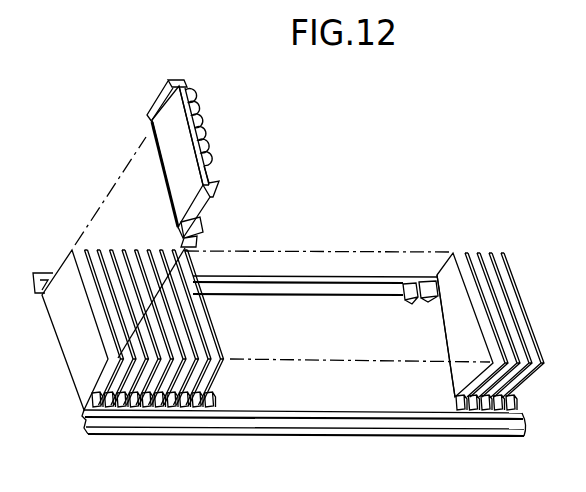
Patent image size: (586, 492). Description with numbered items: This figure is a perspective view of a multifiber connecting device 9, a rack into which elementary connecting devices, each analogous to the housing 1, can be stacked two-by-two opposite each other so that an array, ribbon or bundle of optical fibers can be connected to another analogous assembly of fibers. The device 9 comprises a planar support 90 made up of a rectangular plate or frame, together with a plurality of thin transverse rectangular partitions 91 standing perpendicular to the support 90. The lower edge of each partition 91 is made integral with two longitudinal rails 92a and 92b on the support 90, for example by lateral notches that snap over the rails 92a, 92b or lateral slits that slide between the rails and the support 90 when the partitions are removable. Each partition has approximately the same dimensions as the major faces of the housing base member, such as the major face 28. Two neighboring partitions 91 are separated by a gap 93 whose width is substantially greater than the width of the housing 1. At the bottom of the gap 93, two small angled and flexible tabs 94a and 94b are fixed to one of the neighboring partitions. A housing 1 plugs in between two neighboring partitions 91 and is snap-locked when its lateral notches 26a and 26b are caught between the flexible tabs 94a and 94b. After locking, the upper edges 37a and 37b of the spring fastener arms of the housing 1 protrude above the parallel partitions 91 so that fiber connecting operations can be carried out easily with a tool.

The housing 1 is at (116, 112).
The multifiber connecting device 9 is at (408, 195).
The lateral notch 26a is at (200, 228).
The lateral notch 26b is at (147, 117).
The major face 28 is at (148, 138).
The upper edge 37a is at (222, 138).
The upper edge 37b is at (207, 96).
The planar support 90 is at (340, 343).
The partition 91 is at (455, 376).
The longitudinal rail 92a is at (376, 437).
The longitudinal rail 92b is at (380, 278).
The gap 93 is at (488, 245).
The flexible tab 94a is at (215, 397).
The flexible tab 94b is at (409, 301).